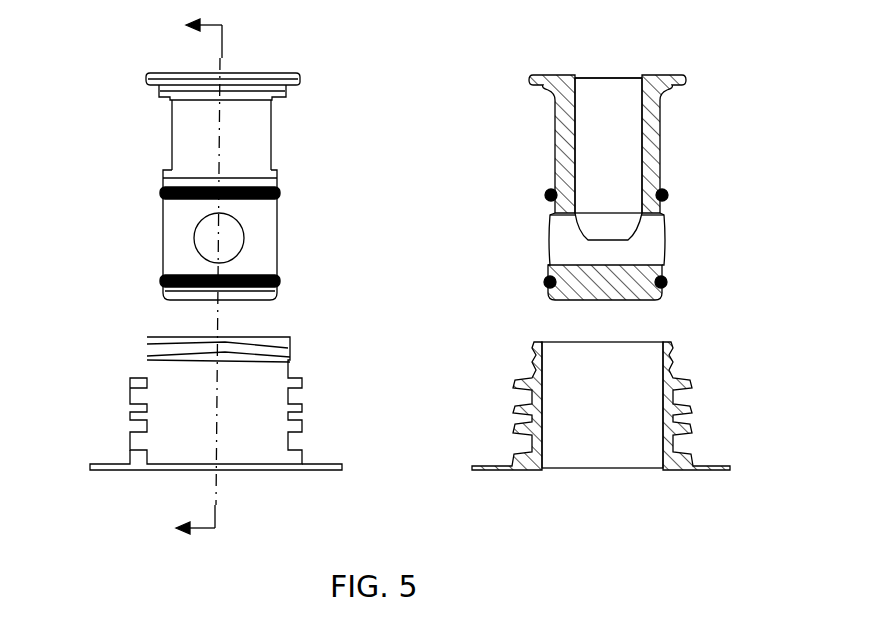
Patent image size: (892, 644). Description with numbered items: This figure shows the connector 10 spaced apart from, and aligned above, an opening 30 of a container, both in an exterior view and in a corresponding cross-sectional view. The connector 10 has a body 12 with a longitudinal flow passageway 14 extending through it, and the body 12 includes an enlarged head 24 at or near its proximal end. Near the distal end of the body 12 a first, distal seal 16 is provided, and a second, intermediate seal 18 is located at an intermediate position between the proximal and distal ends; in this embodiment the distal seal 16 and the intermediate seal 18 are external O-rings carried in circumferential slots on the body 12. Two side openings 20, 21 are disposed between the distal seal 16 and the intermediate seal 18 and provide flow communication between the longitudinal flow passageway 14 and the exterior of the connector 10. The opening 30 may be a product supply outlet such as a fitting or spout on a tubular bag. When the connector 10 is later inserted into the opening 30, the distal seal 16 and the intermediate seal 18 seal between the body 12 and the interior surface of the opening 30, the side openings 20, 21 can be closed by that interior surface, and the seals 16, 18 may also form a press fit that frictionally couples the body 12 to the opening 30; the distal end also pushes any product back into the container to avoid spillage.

The connector 10 is at (346, 64).
The body 12 is at (656, 138).
The longitudinal flow passageway 14 is at (612, 85).
The distal seal 16 is at (279, 282).
The intermediate seal 18 is at (279, 194).
The side opening 20 is at (552, 240).
The side opening 21 is at (664, 240).
The enlarged head 24 is at (148, 76).
The opening 30 is at (330, 370).